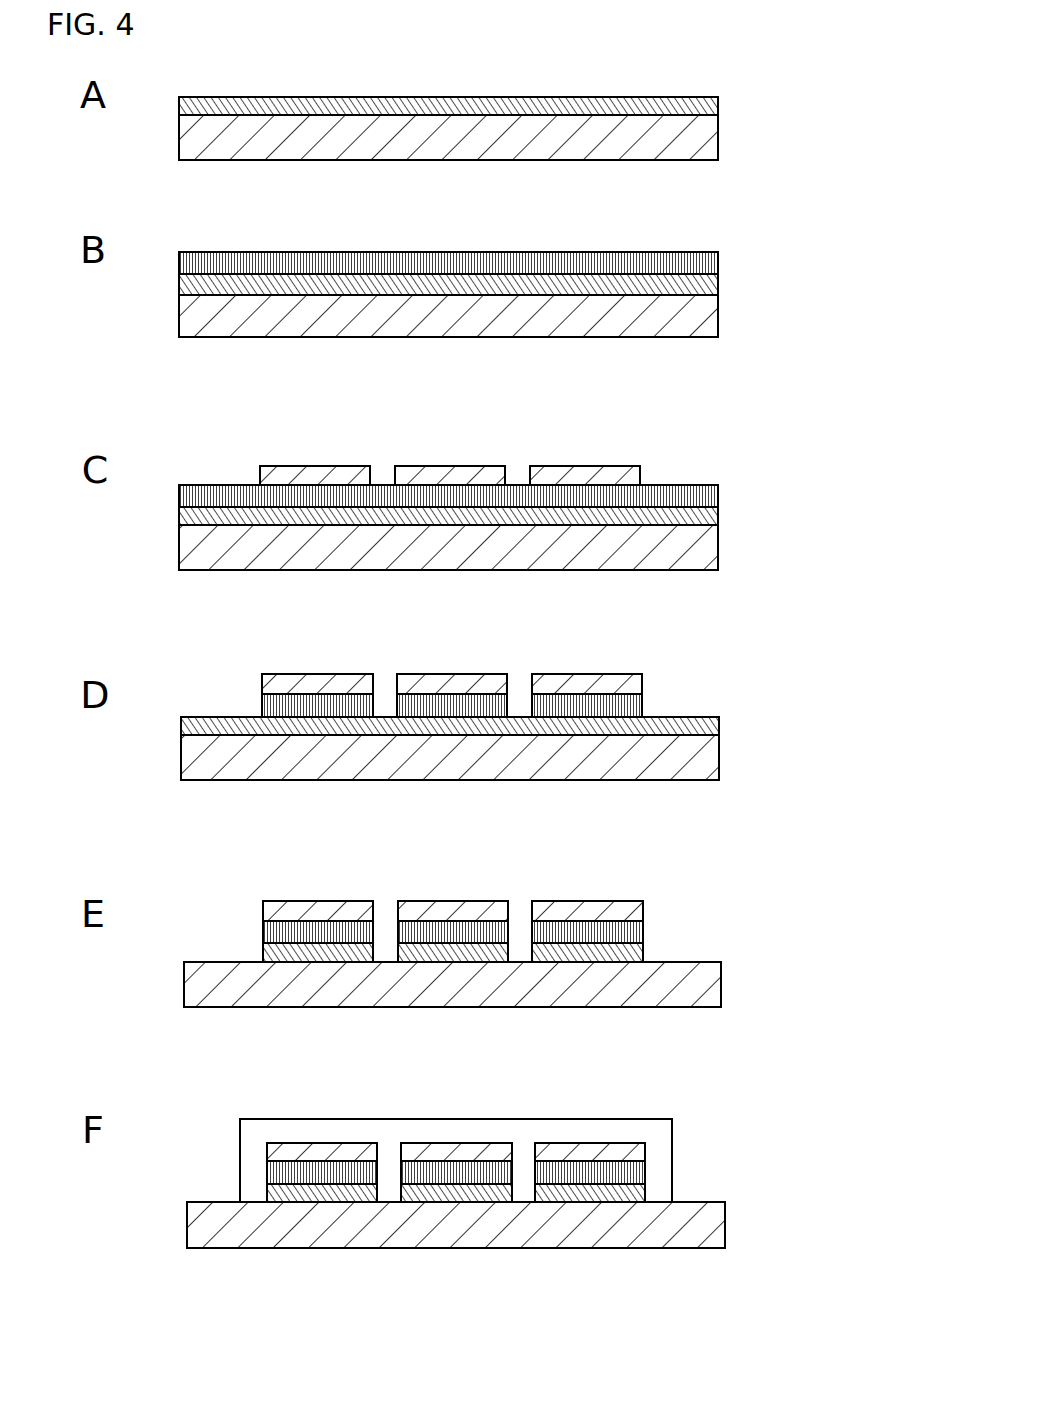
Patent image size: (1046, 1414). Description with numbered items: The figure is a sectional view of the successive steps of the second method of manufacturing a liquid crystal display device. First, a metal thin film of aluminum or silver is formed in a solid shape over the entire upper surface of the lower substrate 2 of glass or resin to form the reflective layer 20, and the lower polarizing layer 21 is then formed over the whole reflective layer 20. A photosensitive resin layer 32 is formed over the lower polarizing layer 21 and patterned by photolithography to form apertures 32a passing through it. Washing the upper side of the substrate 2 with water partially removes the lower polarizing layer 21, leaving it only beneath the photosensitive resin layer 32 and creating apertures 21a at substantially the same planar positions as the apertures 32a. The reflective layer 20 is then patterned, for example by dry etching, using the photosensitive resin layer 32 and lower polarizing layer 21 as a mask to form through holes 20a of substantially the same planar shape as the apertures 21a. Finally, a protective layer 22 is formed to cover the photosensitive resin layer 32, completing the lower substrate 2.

The lower substrate 2 is at (713, 139).
The reflective layer 20 is at (713, 104).
The through holes 20a is at (384, 963).
The lower polarizing layer 21 is at (715, 262).
The apertures 21a is at (378, 708).
The protective layer 22 is at (263, 1125).
The photosensitive resin layer 32 is at (340, 472).
The apertures 32a is at (378, 474).